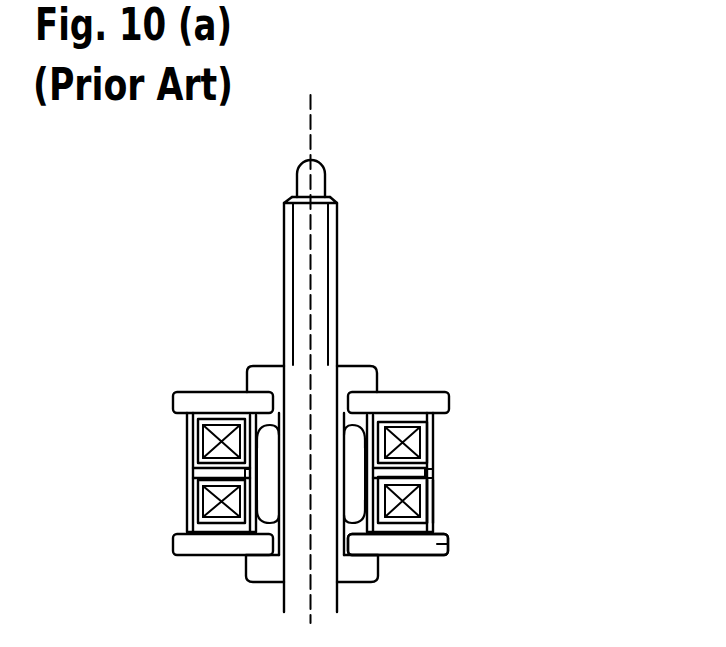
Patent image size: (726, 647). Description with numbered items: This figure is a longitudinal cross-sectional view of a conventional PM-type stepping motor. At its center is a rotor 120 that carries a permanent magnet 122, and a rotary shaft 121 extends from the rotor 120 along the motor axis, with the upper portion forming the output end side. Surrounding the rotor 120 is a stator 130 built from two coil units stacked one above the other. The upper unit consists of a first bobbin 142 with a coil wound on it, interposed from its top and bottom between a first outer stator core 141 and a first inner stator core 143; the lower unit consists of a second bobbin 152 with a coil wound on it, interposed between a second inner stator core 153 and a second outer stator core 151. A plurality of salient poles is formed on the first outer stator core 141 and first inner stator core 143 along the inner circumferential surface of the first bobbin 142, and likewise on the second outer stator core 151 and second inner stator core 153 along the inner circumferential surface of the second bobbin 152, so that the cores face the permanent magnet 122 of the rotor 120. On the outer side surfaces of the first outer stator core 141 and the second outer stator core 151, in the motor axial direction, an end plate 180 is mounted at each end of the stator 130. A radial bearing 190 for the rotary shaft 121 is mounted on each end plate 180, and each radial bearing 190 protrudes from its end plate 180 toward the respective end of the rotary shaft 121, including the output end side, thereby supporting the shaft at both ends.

The rotor 120 is at (263, 458).
The rotary shaft 121 is at (322, 303).
The permanent magnet 122 is at (262, 411).
The stator 130 is at (512, 315).
The first outer stator core 141 is at (435, 425).
The first bobbin 142 is at (422, 442).
The first inner stator core 143 is at (433, 466).
The second outer stator core 151 is at (440, 533).
The second bobbin 152 is at (433, 508).
The second inner stator core 153 is at (433, 477).
The end plate 180 is at (433, 392).
The radial bearing 190 is at (358, 378).